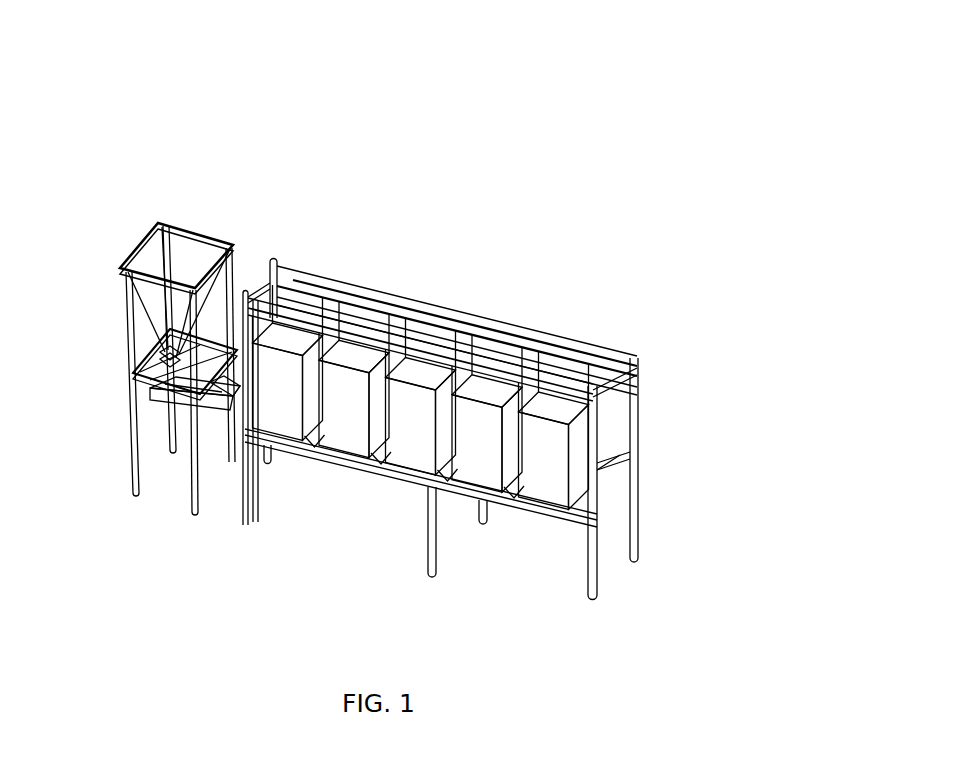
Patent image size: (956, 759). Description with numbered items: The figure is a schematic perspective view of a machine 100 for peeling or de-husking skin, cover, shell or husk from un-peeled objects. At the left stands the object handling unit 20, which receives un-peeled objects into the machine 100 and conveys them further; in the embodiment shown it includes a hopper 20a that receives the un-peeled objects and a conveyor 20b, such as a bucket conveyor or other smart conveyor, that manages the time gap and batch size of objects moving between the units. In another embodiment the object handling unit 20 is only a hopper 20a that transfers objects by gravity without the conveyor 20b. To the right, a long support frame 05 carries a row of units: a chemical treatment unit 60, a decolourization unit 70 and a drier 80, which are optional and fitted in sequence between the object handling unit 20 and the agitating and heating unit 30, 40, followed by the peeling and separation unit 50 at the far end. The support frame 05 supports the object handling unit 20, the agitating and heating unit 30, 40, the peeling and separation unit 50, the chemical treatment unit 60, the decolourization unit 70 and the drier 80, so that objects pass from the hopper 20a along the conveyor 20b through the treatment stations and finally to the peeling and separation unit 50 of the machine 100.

The machine 100 is at (553, 110).
The object handling unit 20 is at (92, 333).
The hopper 20a is at (213, 227).
The conveyor 20b is at (226, 412).
The support frame 05 is at (342, 483).
The chemical treatment unit 60 is at (295, 312).
The decolourization unit 70 is at (362, 336).
The drier 80 is at (437, 354).
The agitating and heating unit 30 is at (509, 370).
The agitating and heating unit 40 is at (488, 416).
The peeling and separation unit 50 is at (566, 390).